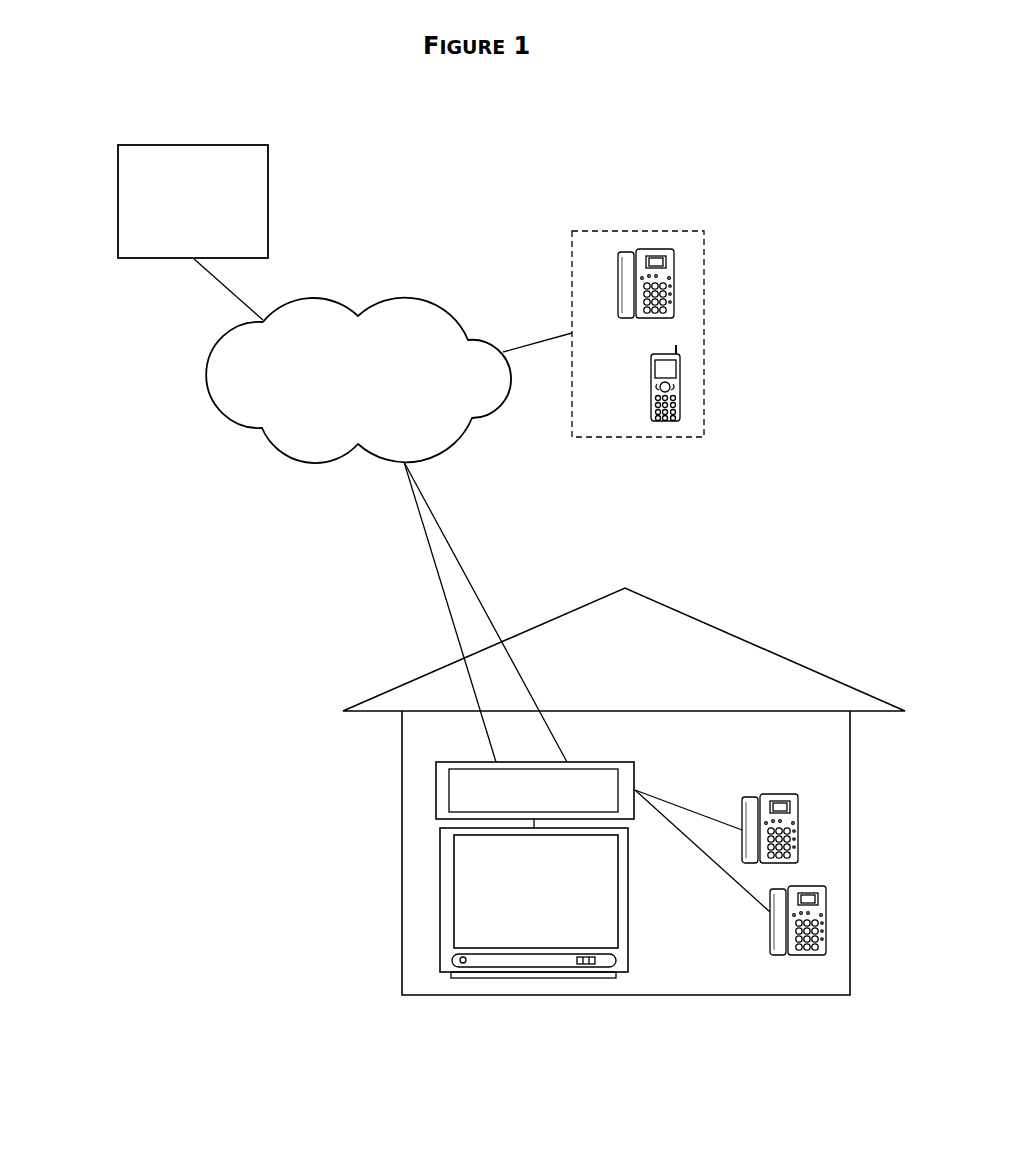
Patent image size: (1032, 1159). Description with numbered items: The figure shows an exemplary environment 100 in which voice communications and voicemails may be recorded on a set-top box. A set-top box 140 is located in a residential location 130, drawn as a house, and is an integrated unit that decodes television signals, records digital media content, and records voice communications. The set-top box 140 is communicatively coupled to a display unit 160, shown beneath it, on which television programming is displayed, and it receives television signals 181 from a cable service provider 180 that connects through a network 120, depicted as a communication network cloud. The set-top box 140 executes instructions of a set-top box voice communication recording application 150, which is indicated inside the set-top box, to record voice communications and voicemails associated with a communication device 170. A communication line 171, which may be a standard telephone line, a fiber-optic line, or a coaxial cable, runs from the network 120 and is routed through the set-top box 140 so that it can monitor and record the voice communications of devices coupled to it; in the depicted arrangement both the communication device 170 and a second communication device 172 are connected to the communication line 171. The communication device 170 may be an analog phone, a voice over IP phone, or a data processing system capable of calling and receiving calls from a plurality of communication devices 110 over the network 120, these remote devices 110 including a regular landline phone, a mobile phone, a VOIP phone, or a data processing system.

The environment 100 is at (62, 55).
The communication devices 110 is at (707, 268).
The network 120 is at (389, 380).
The residential location 130 is at (391, 690).
The set-top box 140 is at (431, 771).
The set-top box voice communication recording application 150 is at (443, 816).
The display unit 160 is at (435, 906).
The communication device 170 is at (803, 800).
The communication line 171 is at (479, 582).
The communication device 172 is at (833, 915).
The cable service provider 180 is at (193, 232).
The television signals 181 is at (439, 582).